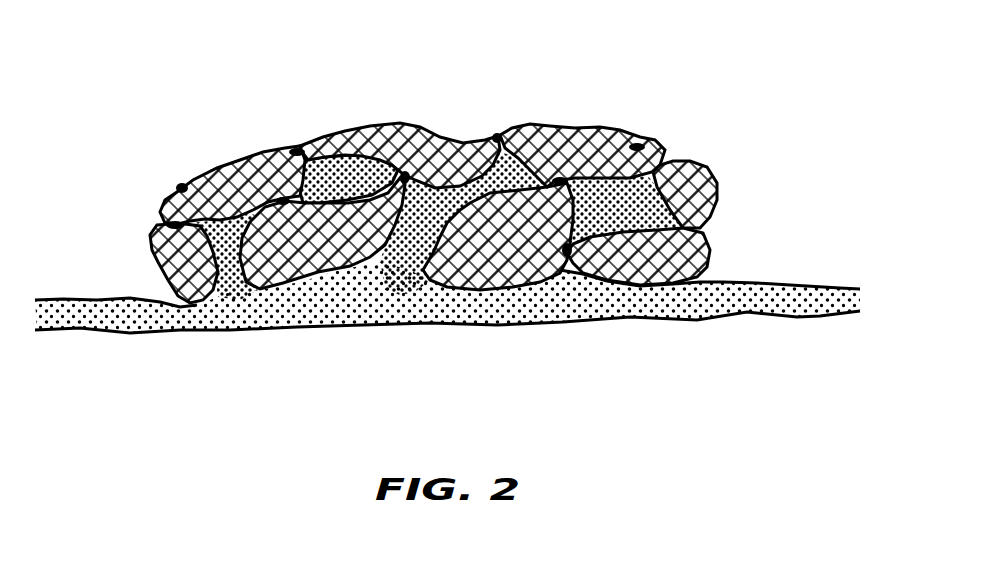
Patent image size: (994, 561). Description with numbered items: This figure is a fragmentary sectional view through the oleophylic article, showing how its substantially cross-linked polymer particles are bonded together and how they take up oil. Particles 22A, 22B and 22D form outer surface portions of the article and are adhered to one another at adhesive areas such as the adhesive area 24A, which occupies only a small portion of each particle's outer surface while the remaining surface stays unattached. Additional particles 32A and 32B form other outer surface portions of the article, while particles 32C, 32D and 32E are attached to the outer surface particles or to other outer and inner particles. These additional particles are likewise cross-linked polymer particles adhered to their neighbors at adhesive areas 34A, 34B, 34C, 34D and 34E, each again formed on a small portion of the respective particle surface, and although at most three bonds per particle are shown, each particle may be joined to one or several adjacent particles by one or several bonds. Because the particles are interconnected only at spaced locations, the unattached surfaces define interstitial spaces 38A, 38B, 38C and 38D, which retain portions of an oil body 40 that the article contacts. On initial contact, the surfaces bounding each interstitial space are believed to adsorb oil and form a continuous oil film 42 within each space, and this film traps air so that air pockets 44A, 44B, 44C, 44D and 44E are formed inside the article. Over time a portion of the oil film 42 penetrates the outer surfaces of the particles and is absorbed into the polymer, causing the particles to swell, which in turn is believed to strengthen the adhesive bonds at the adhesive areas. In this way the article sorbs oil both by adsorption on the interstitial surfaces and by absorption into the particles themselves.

The cross-linked polymer particle 22A is at (590, 133).
The cross-linked polymer particle 22B is at (430, 133).
The cross-linked polymer particle 22D is at (703, 168).
The adhesive area 24A is at (505, 140).
The additional particle 32A is at (250, 160).
The additional particle 32B is at (157, 226).
The additional particle 32C is at (250, 277).
The additional particle 32D is at (472, 276).
The additional particle 32E is at (688, 263).
The adhesive area 34A is at (322, 150).
The adhesive area 34B is at (172, 198).
The adhesive area 34C is at (242, 182).
The adhesive area 34D is at (571, 268).
The adhesive area 34E is at (690, 231).
The interstitial space 38A is at (667, 150).
The interstitial space 38B is at (530, 147).
The interstitial space 38C is at (335, 142).
The interstitial space 38D is at (177, 273).
The oil body 40 is at (755, 305).
The oil film 42 is at (182, 185).
The air pocket 44A is at (623, 213).
The air pocket 44B is at (540, 125).
The air pocket 44C is at (445, 205).
The air pocket 44D is at (350, 203).
The air pocket 44E is at (230, 243).